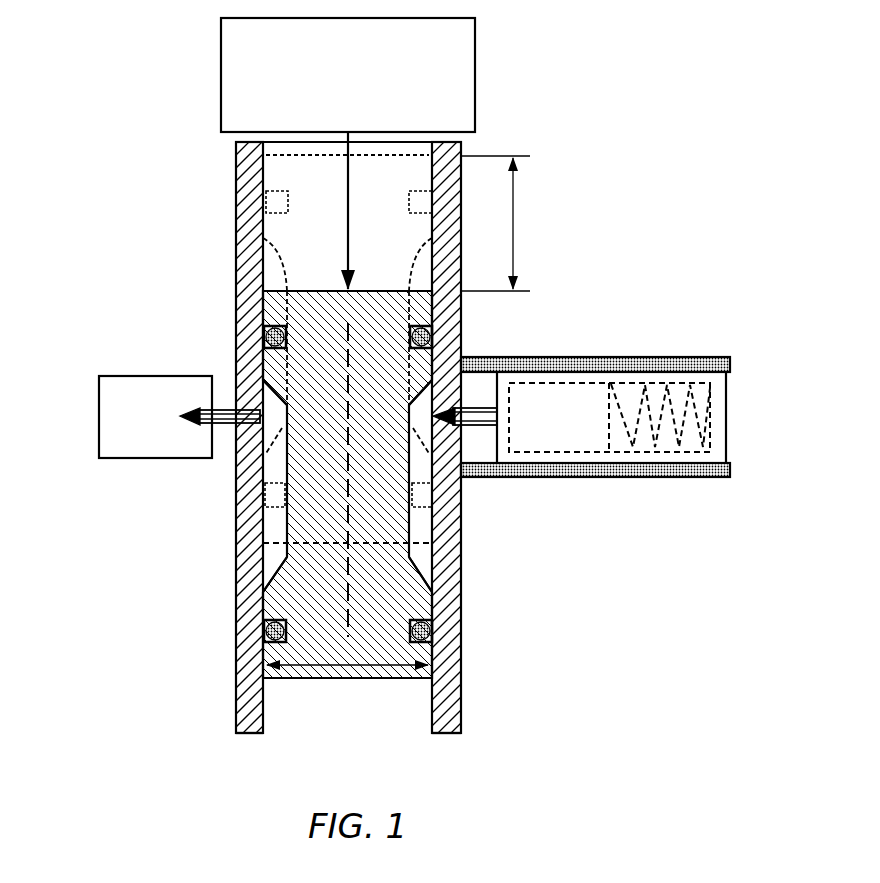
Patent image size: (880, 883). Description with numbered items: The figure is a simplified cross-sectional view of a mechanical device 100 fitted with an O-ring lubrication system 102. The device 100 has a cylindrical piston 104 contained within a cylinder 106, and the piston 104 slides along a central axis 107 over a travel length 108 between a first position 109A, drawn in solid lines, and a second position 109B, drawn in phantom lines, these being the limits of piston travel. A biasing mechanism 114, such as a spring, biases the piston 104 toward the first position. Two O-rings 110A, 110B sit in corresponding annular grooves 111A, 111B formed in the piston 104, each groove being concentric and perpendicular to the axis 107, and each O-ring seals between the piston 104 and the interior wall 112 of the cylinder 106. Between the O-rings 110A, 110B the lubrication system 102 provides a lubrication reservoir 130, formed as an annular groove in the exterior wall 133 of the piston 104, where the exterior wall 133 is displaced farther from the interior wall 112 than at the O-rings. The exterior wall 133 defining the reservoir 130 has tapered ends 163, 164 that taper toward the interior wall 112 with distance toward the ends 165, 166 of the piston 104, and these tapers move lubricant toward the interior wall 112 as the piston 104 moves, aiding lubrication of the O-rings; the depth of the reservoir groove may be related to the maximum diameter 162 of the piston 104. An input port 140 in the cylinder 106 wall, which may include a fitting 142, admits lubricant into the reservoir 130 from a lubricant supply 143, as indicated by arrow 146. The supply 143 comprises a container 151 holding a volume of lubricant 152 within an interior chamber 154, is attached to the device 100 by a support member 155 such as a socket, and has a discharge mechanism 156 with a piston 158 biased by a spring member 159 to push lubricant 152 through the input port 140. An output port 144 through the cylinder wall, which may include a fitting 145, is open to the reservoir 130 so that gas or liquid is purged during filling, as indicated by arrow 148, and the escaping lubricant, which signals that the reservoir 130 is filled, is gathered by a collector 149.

The mechanical device 100 is at (137, 77).
The O-ring lubrication system 102 is at (580, 283).
The cylindrical piston 104 is at (263, 252).
The cylinder 106 is at (243, 688).
The central axis 107 is at (350, 350).
The travel length 108 is at (515, 212).
The first position 109A is at (428, 690).
The second position 109B is at (423, 143).
The O-ring 110A is at (266, 195).
The O-ring 110B is at (267, 505).
The annular groove 111A is at (265, 328).
The annular groove 111B is at (268, 620).
The interior wall 112 is at (432, 715).
The biasing mechanism 114 is at (470, 45).
The lubrication reservoir 130 is at (420, 528).
The exterior wall 133 is at (285, 537).
The input port 140 is at (455, 408).
The fitting 142 is at (470, 427).
The lubricant supply 143 is at (698, 372).
The output port 144 is at (258, 432).
The fitting 145 is at (222, 425).
The arrow 146 is at (480, 418).
The arrow 148 is at (195, 412).
The collector 149 is at (99, 393).
The container 151 is at (623, 372).
The lubricant 152 is at (558, 437).
The interior chamber 154 is at (581, 397).
The support member 155 is at (655, 372).
The discharge mechanism 156 is at (712, 388).
The piston 158 is at (612, 447).
The spring member 159 is at (660, 435).
The maximum diameter 162 is at (332, 665).
The tapered end 163 is at (265, 388).
The tapered end 164 is at (420, 578).
The end of piston 165 is at (318, 290).
The end of piston 166 is at (278, 673).